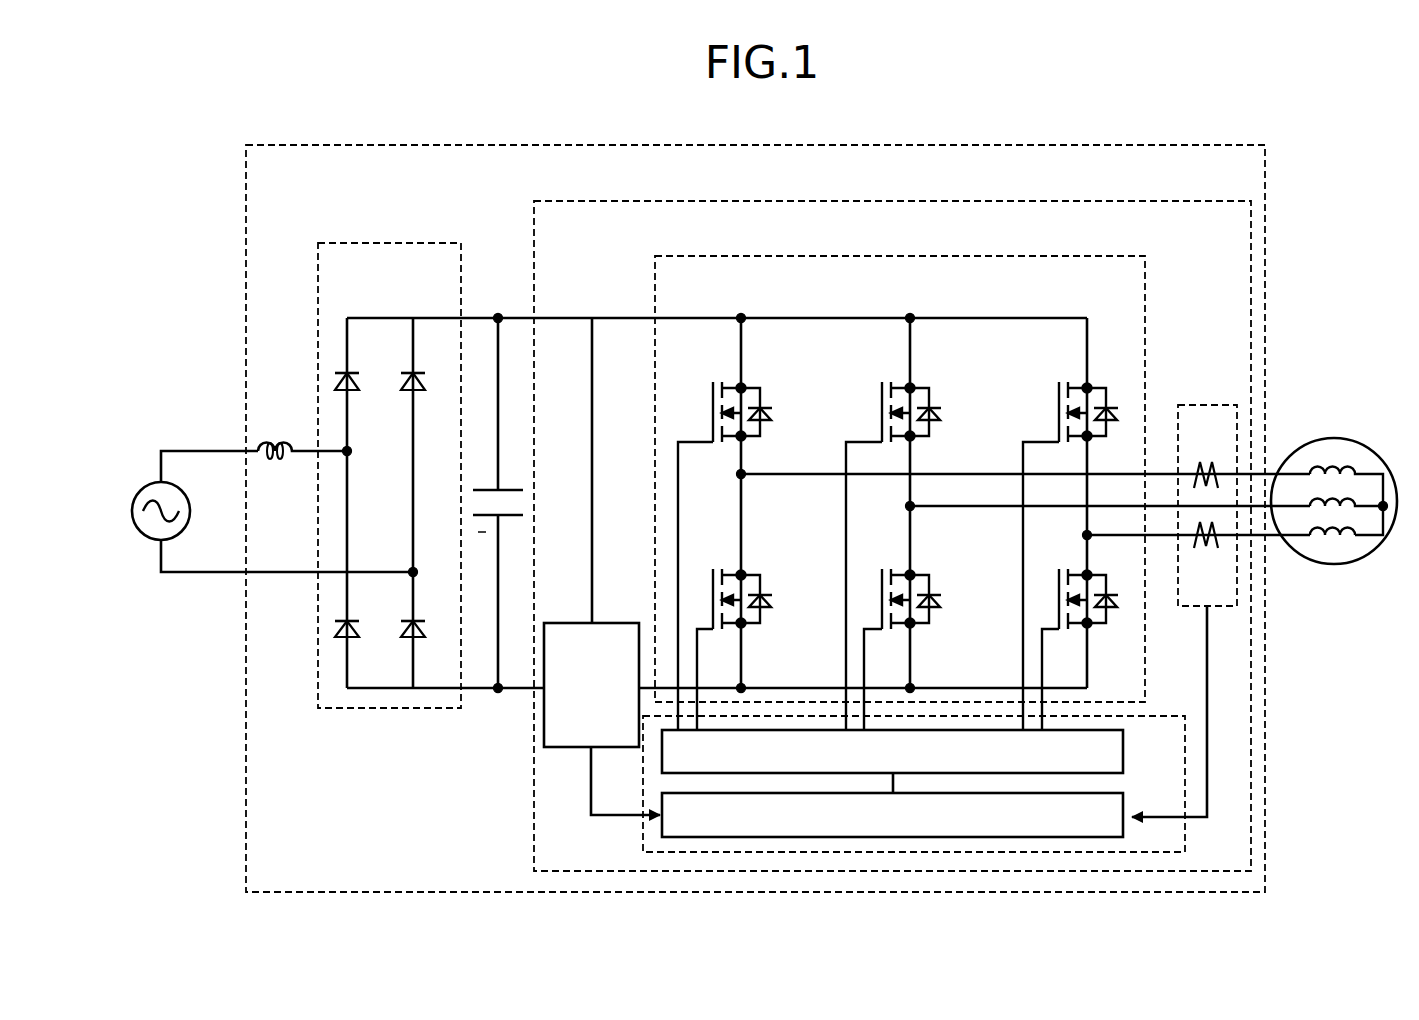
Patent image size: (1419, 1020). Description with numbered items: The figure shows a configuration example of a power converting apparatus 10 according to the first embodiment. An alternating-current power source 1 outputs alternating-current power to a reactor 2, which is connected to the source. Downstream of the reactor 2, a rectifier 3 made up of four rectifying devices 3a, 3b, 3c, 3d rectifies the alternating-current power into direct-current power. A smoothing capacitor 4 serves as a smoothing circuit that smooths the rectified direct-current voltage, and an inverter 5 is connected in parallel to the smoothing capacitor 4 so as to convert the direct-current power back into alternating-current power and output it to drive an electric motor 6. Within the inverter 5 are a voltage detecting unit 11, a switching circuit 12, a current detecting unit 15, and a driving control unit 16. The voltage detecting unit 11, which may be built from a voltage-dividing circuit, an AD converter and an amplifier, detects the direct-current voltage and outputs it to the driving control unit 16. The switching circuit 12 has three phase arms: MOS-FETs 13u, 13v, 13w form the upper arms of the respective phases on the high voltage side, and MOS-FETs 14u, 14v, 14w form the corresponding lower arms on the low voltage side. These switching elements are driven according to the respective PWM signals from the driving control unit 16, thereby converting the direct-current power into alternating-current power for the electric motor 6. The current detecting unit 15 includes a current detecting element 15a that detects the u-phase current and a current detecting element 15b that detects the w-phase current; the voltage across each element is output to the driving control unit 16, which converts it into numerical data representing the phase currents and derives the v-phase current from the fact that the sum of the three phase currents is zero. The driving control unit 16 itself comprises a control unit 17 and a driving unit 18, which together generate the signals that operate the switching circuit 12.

The alternating-current power source 1 is at (190, 501).
The reactor 2 is at (267, 445).
The rectifier 3 is at (426, 244).
The rectifying device 3a is at (351, 391).
The rectifying device 3b is at (417, 391).
The rectifying device 3c is at (351, 638).
The rectifying device 3d is at (417, 638).
The smoothing capacitor 4 is at (505, 489).
The inverter 5 is at (1182, 201).
The electric motor 6 is at (1341, 437).
The power converting apparatus 10 is at (1210, 145).
The voltage detecting unit 11 is at (611, 622).
The switching circuit 12 is at (1101, 257).
The MOS-FET 13u is at (718, 377).
The MOS-FET 13v is at (887, 377).
The MOS-FET 13w is at (1064, 377).
The MOS-FET 14u is at (727, 563).
The MOS-FET 14v is at (896, 563).
The MOS-FET 14w is at (1074, 563).
The current detecting unit 15 is at (1209, 405).
The current detecting element 15a is at (1204, 461).
The current detecting element 15b is at (1206, 551).
The driving control unit 16 is at (1170, 717).
The control unit 17 is at (1124, 800).
The driving unit 18 is at (1124, 752).